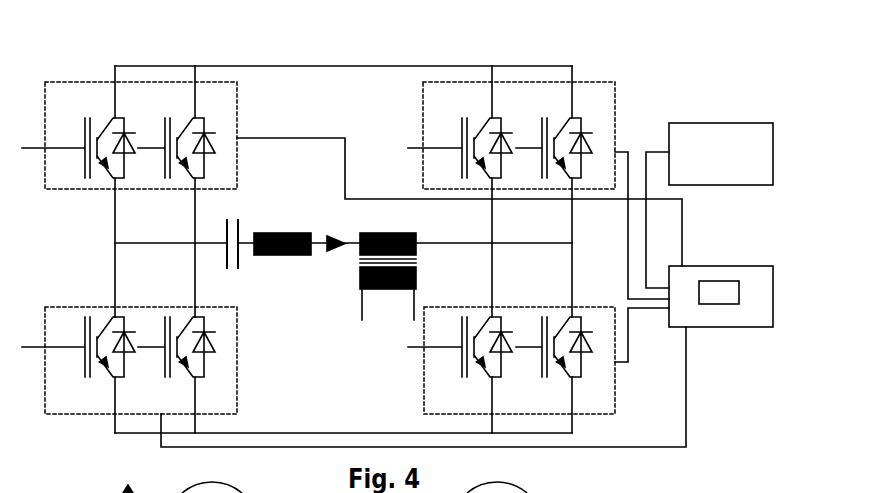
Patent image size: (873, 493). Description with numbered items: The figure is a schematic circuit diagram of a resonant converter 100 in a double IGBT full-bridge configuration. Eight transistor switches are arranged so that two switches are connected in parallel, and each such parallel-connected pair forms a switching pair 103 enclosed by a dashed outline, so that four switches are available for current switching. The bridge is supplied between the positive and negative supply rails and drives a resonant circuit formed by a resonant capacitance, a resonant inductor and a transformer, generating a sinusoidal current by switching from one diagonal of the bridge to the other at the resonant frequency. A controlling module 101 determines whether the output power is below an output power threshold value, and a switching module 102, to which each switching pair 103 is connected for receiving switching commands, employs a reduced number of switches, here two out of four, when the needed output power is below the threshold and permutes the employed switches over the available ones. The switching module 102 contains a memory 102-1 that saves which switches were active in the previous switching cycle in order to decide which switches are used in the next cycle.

The resonant converter 100 is at (630, 60).
The controlling module 101 is at (718, 123).
The switching module 102 is at (743, 323).
The memory 102-1 is at (712, 280).
The switching pair 103 is at (236, 163).